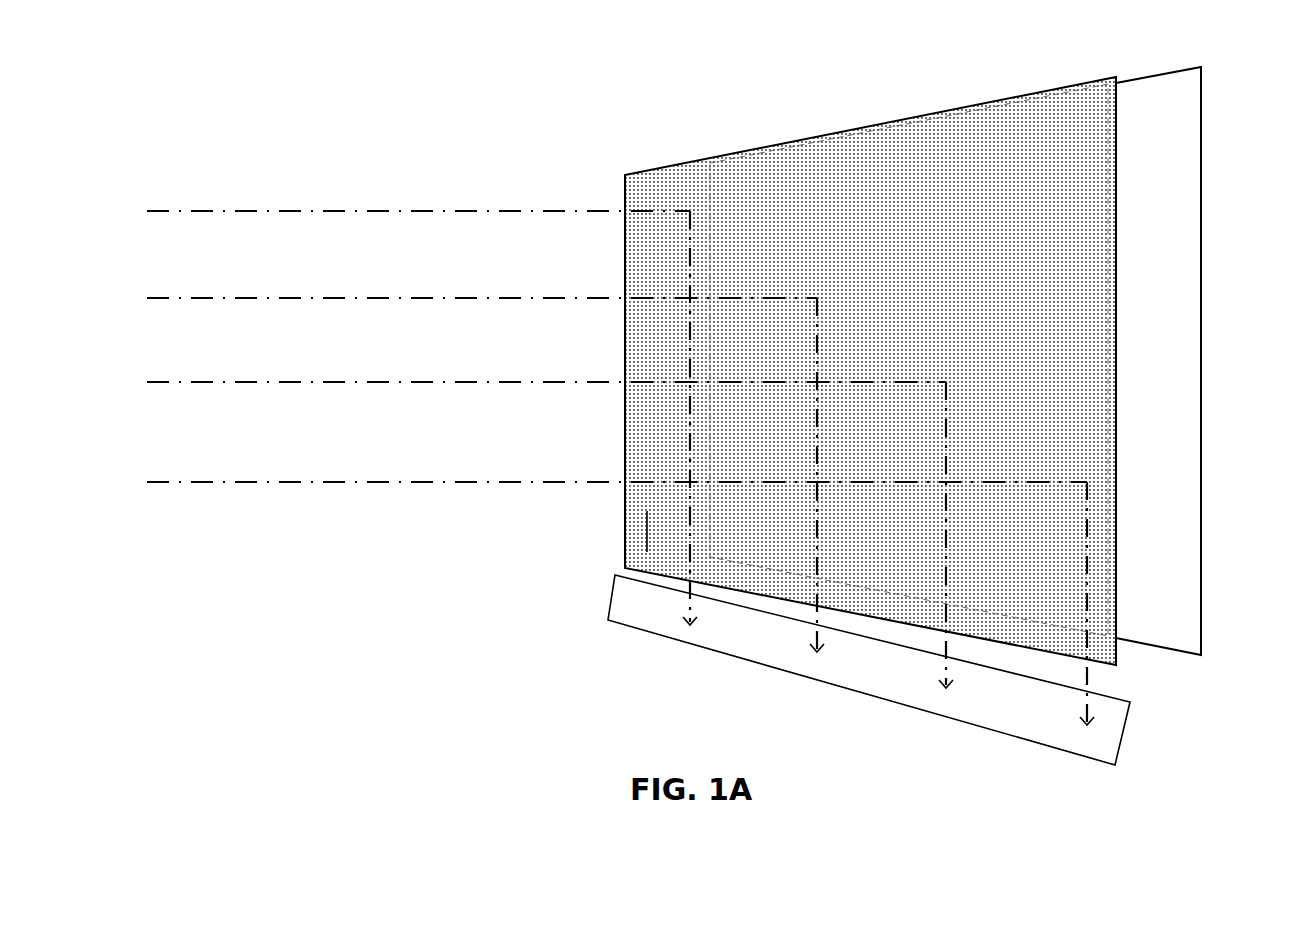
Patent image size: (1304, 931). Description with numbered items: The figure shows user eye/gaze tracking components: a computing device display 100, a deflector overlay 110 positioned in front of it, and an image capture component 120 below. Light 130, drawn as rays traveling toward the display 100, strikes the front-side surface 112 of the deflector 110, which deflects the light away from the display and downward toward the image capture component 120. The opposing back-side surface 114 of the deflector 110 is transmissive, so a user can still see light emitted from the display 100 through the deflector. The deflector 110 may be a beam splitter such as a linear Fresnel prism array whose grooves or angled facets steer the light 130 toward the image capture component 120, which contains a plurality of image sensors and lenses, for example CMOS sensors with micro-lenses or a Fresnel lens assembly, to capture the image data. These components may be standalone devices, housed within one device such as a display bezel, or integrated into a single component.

The computing device display 100 is at (1187, 282).
The deflector overlay 110 is at (648, 188).
The front-side surface 112 is at (638, 533).
The back-side surface 114 is at (1124, 410).
The image capture component 120 is at (647, 610).
The light 130 is at (242, 350).